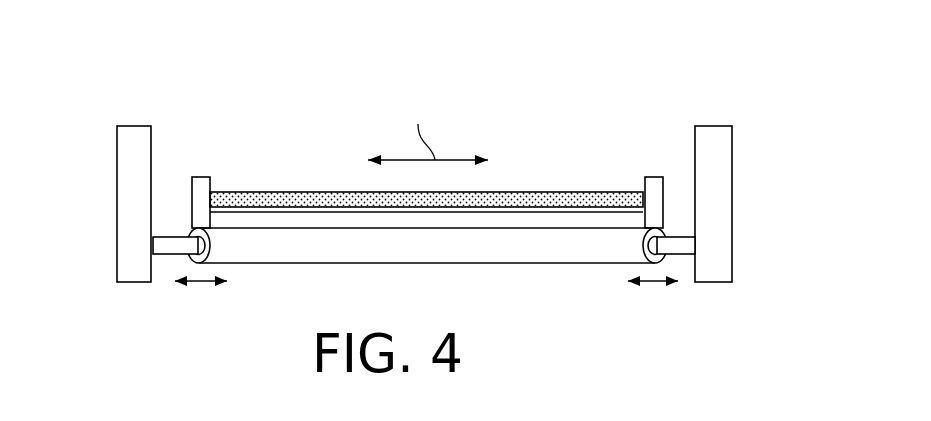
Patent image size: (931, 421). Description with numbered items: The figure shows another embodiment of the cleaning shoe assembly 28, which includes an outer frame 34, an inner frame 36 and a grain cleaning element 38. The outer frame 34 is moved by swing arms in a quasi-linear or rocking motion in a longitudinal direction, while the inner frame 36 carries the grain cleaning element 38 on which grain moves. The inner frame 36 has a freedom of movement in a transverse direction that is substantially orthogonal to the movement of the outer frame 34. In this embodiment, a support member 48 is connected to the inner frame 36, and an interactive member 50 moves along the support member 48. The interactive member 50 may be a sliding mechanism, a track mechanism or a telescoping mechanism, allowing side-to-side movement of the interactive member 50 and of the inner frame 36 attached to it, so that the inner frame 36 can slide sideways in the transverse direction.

The cleaning shoe assembly 28 is at (113, 57).
The outer frame 34 is at (117, 157).
The inner frame 36 is at (202, 177).
The grain cleaning element 38 is at (505, 192).
The support member 48 is at (160, 235).
The interactive member 50 is at (515, 264).